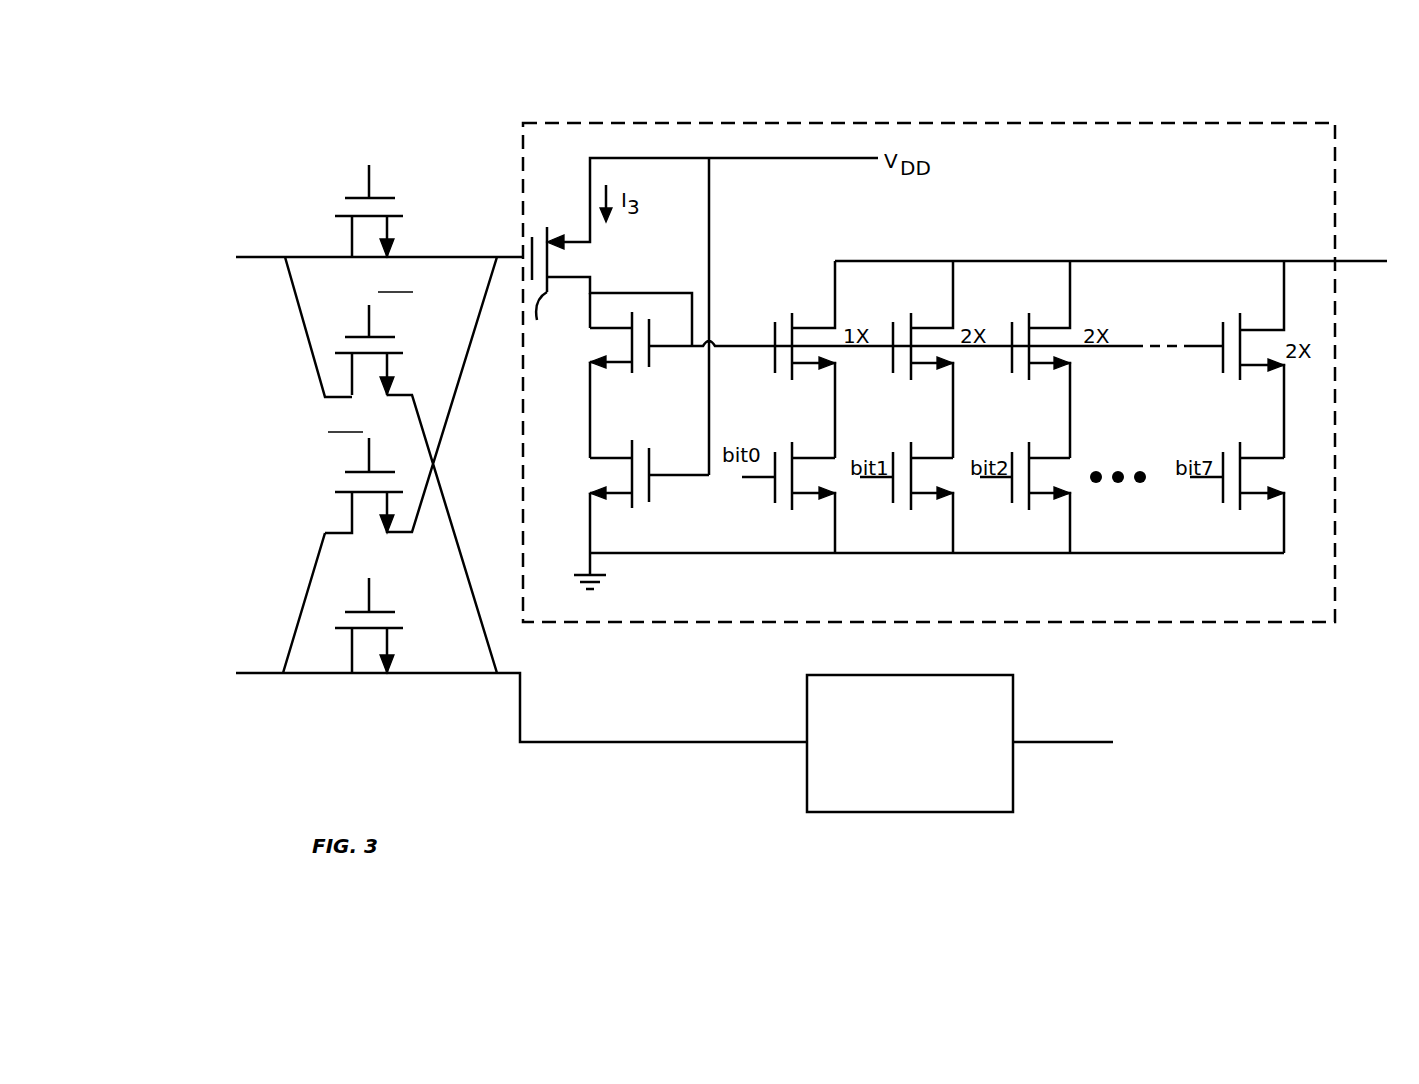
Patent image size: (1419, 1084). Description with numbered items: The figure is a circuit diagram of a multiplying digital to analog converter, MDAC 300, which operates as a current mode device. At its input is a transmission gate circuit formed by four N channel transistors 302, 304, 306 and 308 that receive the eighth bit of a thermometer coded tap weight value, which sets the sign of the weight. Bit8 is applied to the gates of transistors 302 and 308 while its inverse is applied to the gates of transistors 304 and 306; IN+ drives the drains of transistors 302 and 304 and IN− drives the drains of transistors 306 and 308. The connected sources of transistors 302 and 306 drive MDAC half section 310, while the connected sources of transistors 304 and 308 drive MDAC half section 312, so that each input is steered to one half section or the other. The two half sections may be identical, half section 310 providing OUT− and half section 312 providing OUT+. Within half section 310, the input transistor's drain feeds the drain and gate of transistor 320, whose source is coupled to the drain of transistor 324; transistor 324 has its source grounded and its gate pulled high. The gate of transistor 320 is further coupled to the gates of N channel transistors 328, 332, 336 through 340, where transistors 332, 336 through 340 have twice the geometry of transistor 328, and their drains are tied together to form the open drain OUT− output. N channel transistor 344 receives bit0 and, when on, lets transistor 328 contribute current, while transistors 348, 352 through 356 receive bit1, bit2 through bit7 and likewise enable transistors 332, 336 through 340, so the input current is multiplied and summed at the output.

The MDAC 300 is at (1266, 890).
The N channel transistor 302 is at (388, 198).
The N channel transistor 304 is at (388, 337).
The N channel transistor 306 is at (340, 492).
The N channel transistor 308 is at (394, 630).
The MDAC half section 310 is at (932, 122).
The MDAC half section 312 is at (908, 812).
The transistor 320 is at (633, 374).
The transistor 324 is at (650, 502).
The N channel transistor 328 is at (777, 358).
The N channel transistor 332 is at (893, 364).
The N channel transistor 336 is at (1012, 364).
The N channel transistor 340 is at (1223, 365).
The N channel transistor 344 is at (790, 502).
The N channel transistor 348 is at (893, 493).
The N channel transistor 352 is at (1012, 493).
The N channel transistor 356 is at (1223, 491).